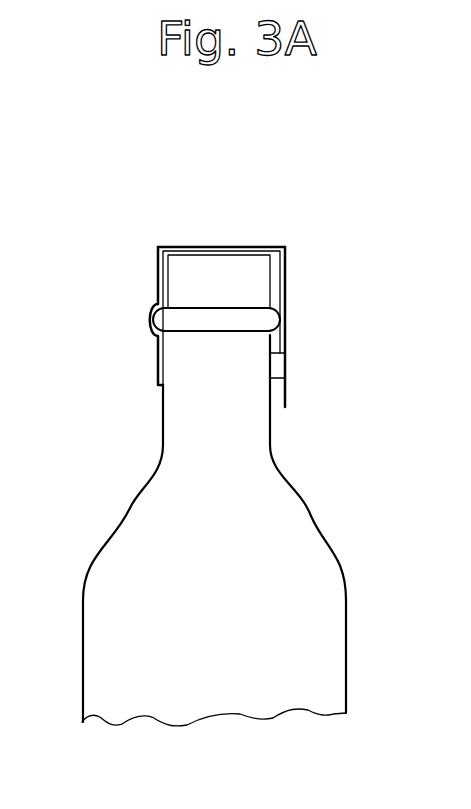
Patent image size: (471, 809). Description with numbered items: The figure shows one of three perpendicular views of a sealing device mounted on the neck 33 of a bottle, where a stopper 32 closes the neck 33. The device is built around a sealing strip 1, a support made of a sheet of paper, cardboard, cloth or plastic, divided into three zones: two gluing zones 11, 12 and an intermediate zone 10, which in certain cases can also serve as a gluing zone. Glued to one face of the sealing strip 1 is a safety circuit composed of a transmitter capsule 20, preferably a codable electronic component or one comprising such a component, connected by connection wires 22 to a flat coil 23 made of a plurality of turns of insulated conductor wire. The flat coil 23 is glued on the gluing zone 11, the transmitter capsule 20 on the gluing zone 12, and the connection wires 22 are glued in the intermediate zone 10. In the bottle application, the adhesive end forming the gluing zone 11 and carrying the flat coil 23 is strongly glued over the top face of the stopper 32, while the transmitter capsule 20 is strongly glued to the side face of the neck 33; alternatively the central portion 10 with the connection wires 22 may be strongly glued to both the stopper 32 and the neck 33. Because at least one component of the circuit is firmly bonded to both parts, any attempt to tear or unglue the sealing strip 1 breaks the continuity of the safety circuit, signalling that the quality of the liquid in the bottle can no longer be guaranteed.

The sealing strip 1 is at (266, 291).
The intermediate zone 10 is at (266, 291).
The gluing zone 11 is at (180, 248).
The gluing zone 12 is at (285, 393).
The transmitter capsule 20 is at (286, 365).
The connection wires 22 is at (282, 275).
The flat coil 23 is at (218, 256).
The stopper 32 is at (180, 280).
The neck 33 is at (180, 395).